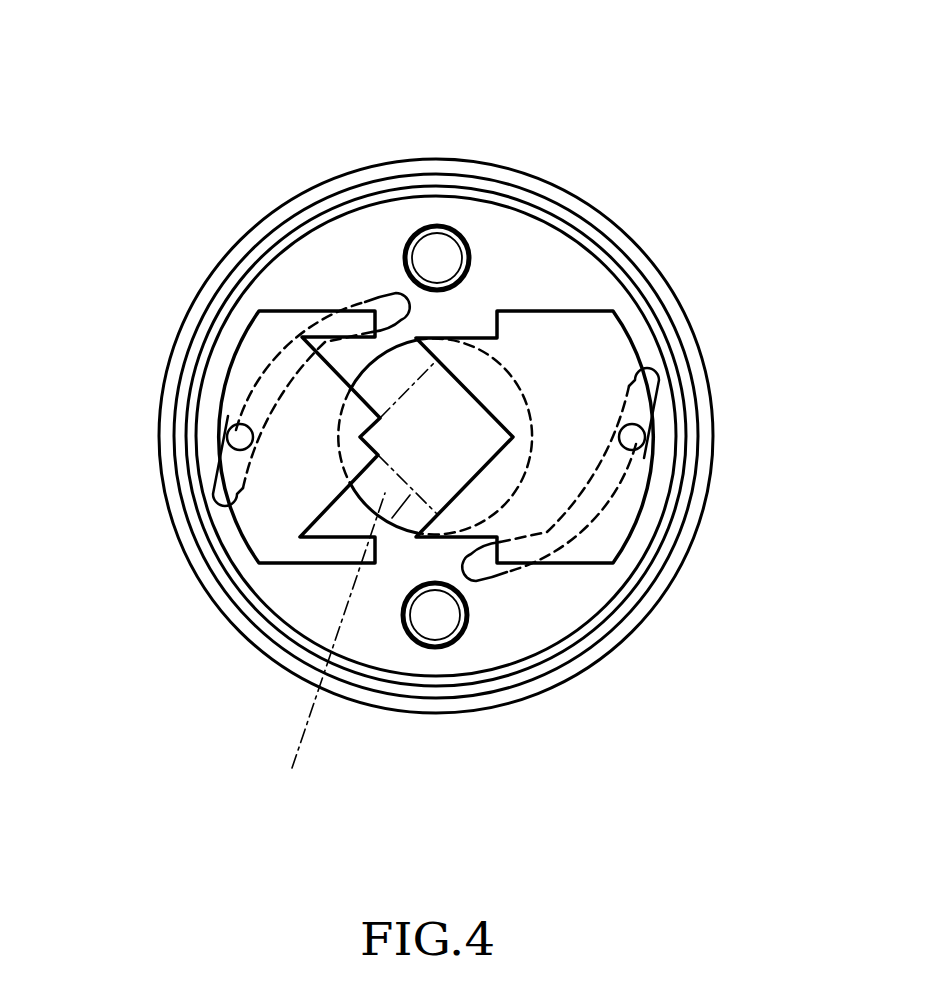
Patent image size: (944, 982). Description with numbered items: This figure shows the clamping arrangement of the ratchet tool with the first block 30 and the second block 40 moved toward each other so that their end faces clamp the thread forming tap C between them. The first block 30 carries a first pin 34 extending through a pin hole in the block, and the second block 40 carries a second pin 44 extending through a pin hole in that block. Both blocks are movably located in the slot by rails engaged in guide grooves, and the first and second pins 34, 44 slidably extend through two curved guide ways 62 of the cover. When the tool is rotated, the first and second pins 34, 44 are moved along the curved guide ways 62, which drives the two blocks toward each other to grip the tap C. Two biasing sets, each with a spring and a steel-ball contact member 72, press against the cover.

The first block 30 is at (618, 525).
The first pin 34 is at (632, 438).
The second block 40 is at (258, 347).
The second pin 44 is at (238, 437).
The curved guide way 62 is at (383, 293).
The contact member 72 is at (438, 250).
The thread forming tap C is at (331, 654).